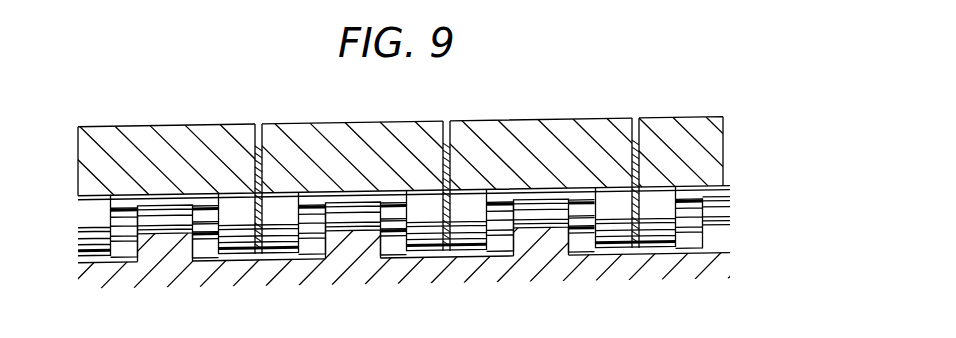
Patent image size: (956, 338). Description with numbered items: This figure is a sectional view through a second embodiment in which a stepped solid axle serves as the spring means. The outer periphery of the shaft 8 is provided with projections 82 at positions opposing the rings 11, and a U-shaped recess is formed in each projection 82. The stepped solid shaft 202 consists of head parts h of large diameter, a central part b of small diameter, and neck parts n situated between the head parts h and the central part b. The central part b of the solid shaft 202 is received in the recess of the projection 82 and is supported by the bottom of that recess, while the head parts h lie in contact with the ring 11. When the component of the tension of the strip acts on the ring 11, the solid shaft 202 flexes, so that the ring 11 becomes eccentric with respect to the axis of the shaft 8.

The ring 11 is at (152, 138).
The shaft 8 is at (396, 321).
The projection 82 is at (167, 245).
The head part h is at (463, 206).
The neck part n is at (500, 215).
The central part b is at (548, 216).
The stepped solid shaft 202 is at (584, 215).